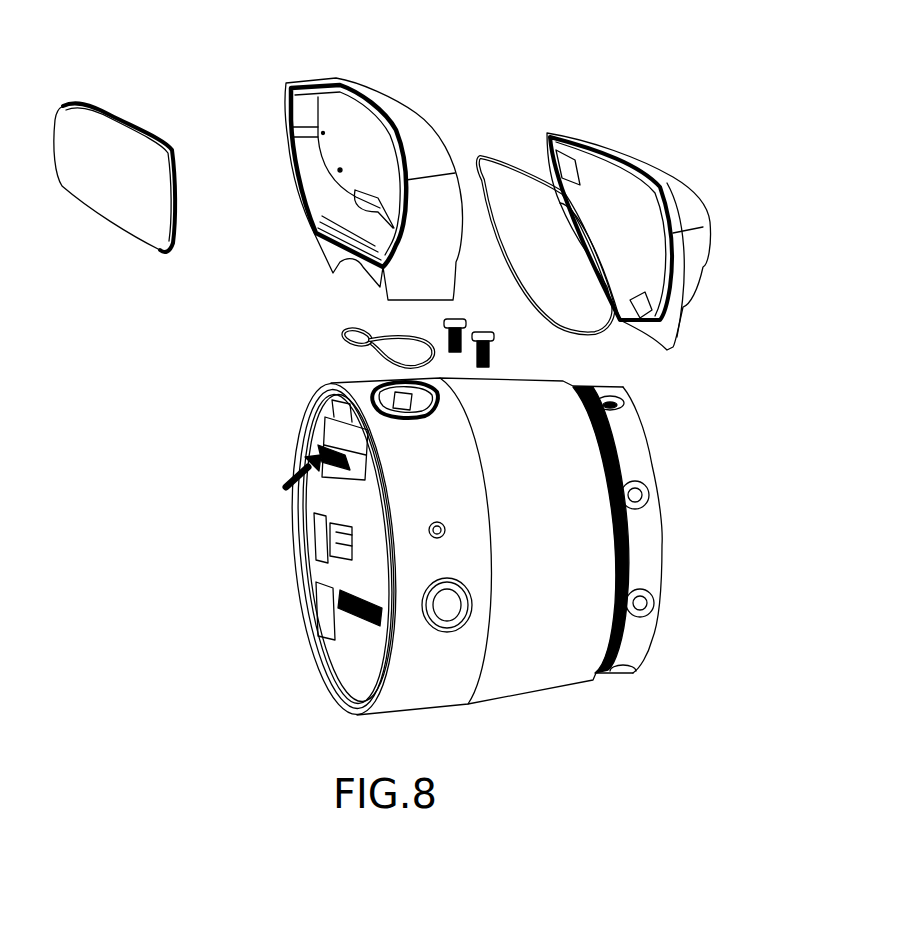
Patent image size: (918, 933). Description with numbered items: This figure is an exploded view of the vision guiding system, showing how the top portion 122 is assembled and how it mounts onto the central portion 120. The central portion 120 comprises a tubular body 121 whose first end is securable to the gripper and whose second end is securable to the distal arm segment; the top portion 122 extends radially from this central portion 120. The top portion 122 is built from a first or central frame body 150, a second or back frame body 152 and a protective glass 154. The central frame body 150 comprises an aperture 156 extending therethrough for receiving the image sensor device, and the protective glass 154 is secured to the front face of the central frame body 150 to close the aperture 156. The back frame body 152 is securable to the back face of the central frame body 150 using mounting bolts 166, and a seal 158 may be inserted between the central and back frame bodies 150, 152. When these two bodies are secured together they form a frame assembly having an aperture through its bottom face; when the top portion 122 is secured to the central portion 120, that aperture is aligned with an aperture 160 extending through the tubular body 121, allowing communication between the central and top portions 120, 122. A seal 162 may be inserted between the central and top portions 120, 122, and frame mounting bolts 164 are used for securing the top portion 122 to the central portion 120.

The central portion 120 is at (680, 636).
The tubular body 121 is at (413, 697).
The top portion 122 is at (683, 112).
The central frame body 150 is at (387, 107).
The back frame body 152 is at (697, 197).
The protective glass 154 is at (75, 122).
The aperture 156 is at (346, 133).
The seal 158 is at (503, 157).
The aperture 160 is at (373, 378).
The seal 162 is at (350, 333).
The frame mounting bolts 164 is at (500, 335).
The mounting bolts 166 is at (286, 487).